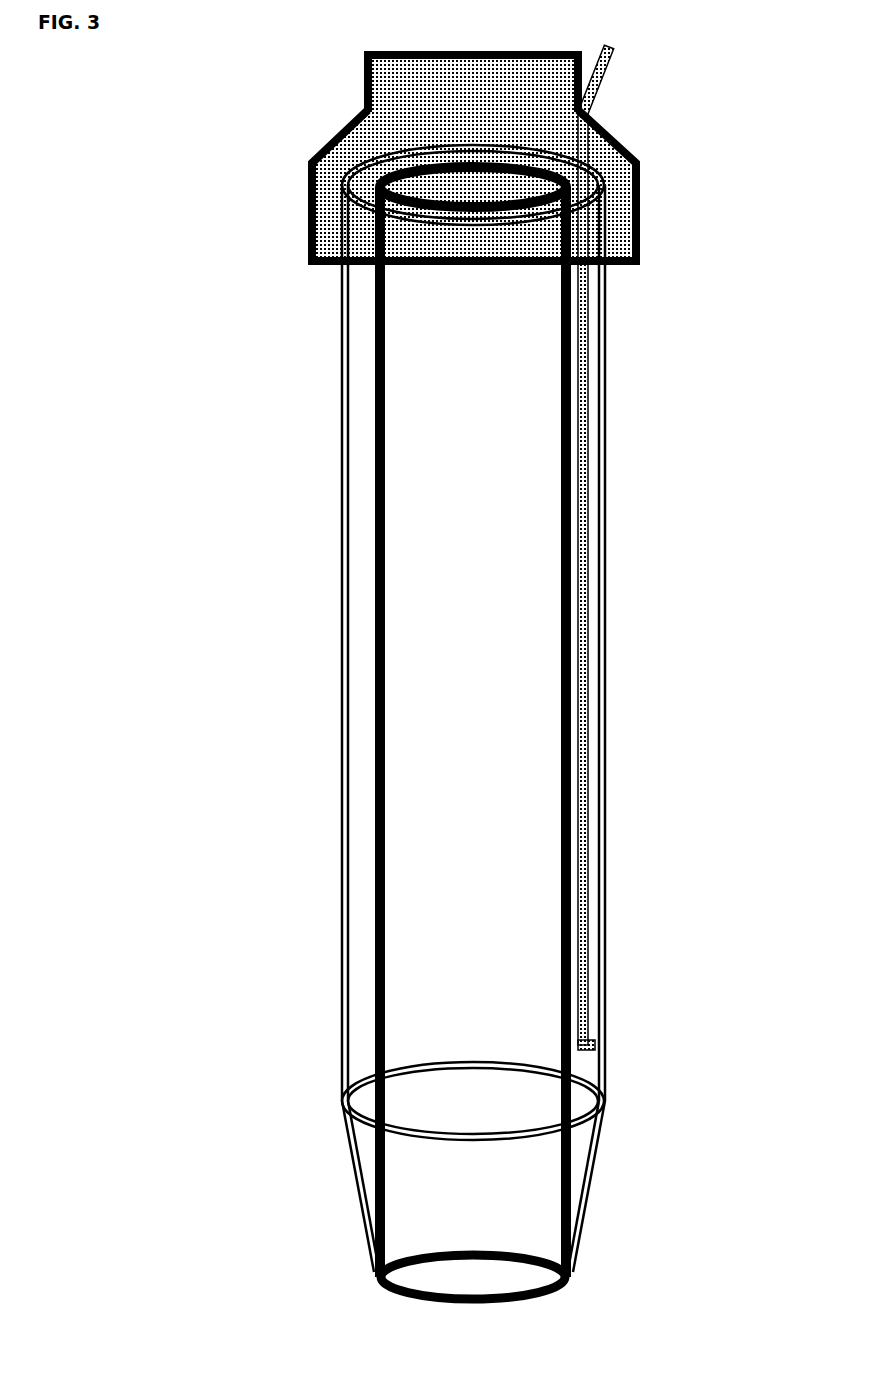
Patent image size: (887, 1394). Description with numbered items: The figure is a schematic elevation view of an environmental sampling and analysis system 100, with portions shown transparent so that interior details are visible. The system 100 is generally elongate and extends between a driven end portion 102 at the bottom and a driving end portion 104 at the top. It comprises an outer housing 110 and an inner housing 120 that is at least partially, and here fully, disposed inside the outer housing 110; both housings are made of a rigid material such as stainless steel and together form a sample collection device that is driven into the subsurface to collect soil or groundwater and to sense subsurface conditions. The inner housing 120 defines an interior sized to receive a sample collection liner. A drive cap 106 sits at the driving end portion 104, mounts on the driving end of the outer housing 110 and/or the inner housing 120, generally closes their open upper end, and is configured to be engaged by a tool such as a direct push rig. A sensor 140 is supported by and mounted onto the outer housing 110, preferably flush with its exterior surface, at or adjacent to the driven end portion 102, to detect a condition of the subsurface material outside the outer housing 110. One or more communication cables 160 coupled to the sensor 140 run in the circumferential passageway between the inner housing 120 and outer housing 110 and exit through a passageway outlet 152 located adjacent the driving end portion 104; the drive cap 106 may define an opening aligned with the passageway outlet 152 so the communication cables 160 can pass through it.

The environmental sampling and analysis system 100 is at (235, 622).
The driven end portion 102 is at (327, 1218).
The driving end portion 104 is at (285, 135).
The drive cap 106 is at (362, 82).
The outer housing 110 is at (341, 455).
The inner housing 120 is at (377, 852).
The sensor 140 is at (615, 1037).
The passageway outlet 152 is at (605, 180).
The communication cables 160 is at (607, 88).